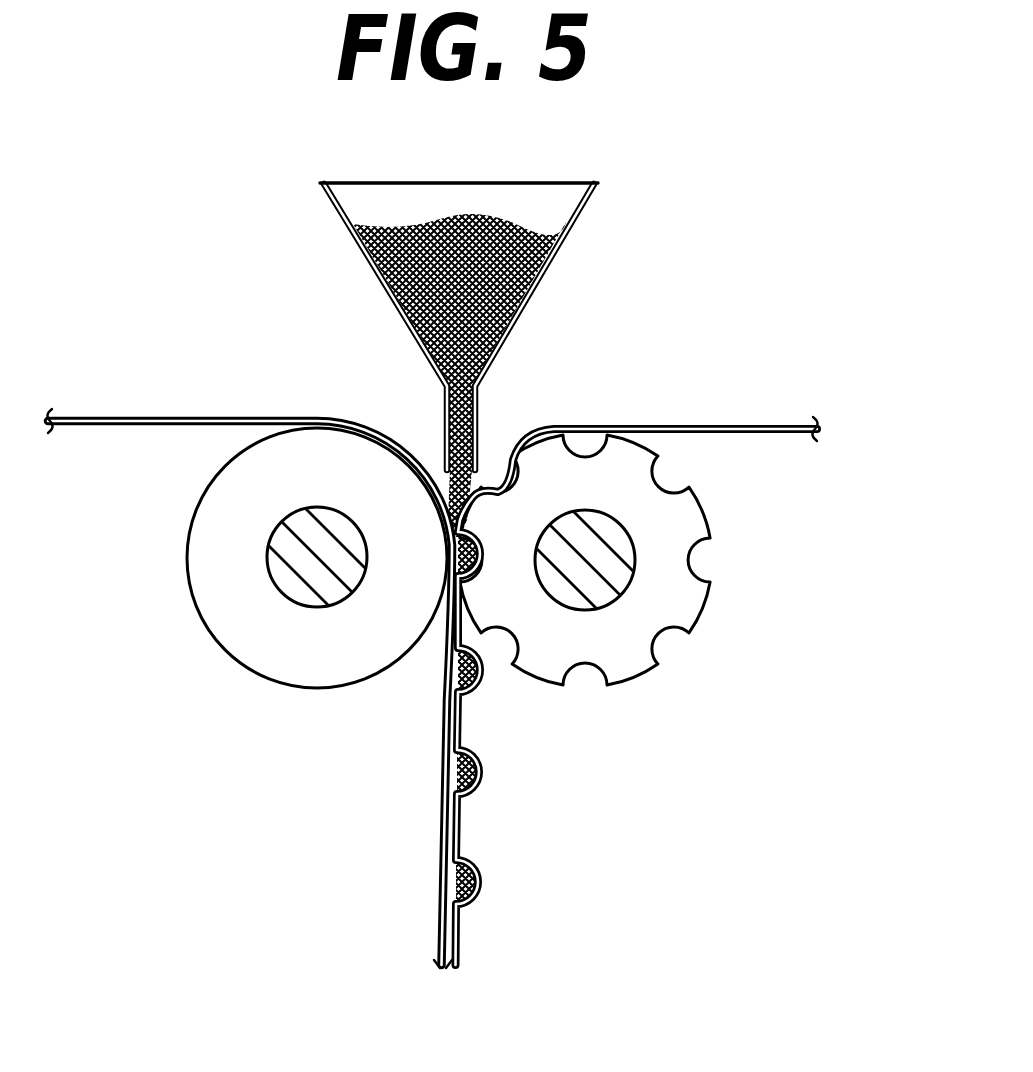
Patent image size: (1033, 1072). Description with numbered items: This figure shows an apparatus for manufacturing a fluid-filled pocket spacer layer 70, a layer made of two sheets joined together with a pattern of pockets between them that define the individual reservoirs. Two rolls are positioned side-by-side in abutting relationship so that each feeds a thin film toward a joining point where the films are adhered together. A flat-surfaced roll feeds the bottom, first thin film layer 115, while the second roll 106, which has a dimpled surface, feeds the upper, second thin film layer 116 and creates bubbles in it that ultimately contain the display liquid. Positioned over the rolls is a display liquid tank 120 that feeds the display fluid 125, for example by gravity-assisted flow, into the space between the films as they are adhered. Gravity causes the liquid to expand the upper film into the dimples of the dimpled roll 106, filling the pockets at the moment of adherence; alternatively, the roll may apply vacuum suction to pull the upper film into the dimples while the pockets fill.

The spacer layer 70 is at (477, 847).
The second roll 106 is at (630, 667).
The first thin film layer 115 is at (105, 417).
The second thin film layer 116 is at (632, 424).
The display liquid tank 120 is at (543, 184).
The display fluid 125 is at (530, 297).